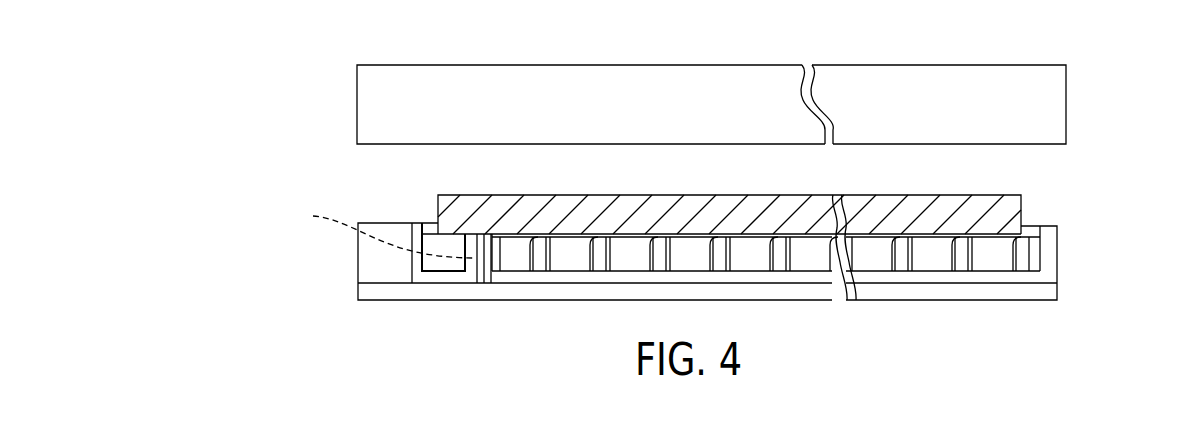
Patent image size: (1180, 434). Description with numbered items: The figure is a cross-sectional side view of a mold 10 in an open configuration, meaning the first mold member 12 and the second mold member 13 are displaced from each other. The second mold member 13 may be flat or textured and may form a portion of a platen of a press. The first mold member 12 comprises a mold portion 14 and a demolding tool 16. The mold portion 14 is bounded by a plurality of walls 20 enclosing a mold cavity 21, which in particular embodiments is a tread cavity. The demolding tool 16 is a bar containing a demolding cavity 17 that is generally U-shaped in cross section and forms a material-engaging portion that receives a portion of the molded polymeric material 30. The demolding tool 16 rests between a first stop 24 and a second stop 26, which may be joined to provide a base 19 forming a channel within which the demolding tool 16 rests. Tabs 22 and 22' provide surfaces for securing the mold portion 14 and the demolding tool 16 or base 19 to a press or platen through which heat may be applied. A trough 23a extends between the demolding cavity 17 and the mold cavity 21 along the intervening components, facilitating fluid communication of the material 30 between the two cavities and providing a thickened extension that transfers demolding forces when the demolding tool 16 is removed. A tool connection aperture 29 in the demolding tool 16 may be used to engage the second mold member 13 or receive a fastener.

The mold 10 is at (302, 152).
The first mold member 12 is at (1095, 283).
The second mold member 13 is at (1056, 101).
The mold portion 14 is at (1068, 232).
The demolding tool 16 is at (428, 278).
The demolding cavity 17 is at (433, 246).
The base 19 is at (387, 296).
The walls 20 is at (488, 282).
The mold cavity 21 is at (932, 252).
The tab 22 is at (1030, 321).
The tab 22' is at (326, 302).
The trough 23a is at (494, 240).
The first stop 24 is at (478, 282).
The second stop 26 is at (377, 267).
The tool connection aperture 29 is at (381, 230).
The polymeric material 30 is at (1012, 208).